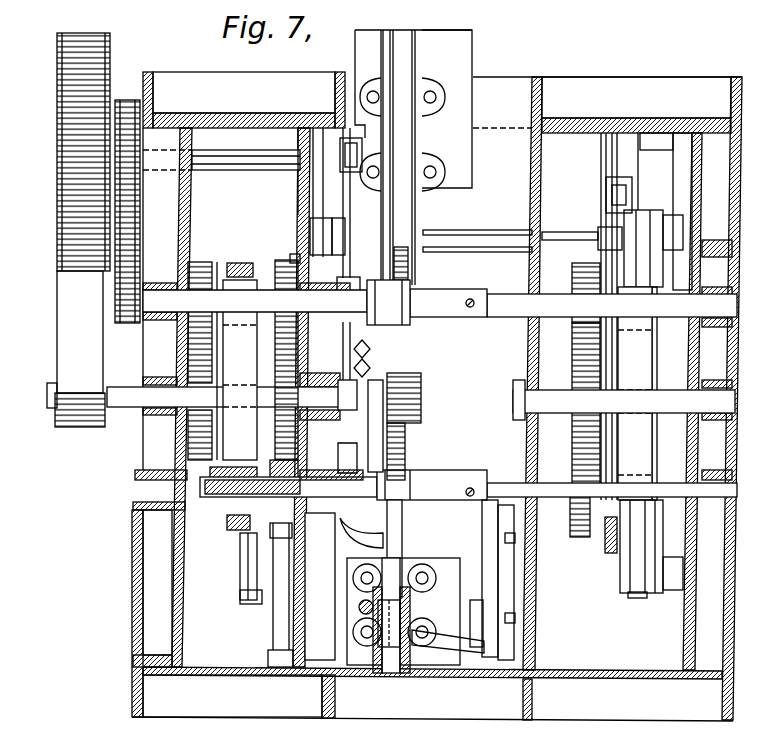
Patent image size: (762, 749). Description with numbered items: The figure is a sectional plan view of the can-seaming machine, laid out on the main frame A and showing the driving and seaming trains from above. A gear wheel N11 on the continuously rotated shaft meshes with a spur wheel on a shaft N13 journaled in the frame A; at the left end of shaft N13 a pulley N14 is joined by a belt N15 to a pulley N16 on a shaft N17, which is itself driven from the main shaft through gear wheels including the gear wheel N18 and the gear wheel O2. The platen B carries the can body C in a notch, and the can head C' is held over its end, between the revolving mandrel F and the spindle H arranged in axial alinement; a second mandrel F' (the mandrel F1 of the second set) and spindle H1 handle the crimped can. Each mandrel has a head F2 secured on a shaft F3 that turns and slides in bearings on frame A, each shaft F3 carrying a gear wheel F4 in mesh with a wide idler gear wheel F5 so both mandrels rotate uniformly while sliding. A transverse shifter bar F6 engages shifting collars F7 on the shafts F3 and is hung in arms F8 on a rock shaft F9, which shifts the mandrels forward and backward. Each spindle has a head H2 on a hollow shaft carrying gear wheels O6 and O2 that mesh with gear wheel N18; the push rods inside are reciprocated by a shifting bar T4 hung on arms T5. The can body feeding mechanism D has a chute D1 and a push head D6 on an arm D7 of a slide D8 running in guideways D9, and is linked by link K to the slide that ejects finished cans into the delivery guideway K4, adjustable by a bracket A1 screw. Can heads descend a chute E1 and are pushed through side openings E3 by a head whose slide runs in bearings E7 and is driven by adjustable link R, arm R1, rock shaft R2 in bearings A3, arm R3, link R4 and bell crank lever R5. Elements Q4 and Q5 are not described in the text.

The main frame A is at (421, 381).
The bracket A1 is at (277, 633).
The bearings A3 is at (288, 208).
The gear wheel N11 is at (140, 245).
The shaft N13 is at (245, 171).
The pulley N14 is at (60, 97).
The belt N15 is at (67, 312).
The pulley N16 is at (56, 420).
The shaft N17 is at (157, 416).
The gear wheel N18 is at (273, 378).
The shifting bar T4 is at (240, 370).
The arms T5 is at (244, 262).
The gear wheel O2 is at (296, 257).
The gear wheel O6 is at (305, 475).
The spindle H is at (320, 586).
The spindle H1 is at (342, 332).
The spindle head H2 is at (360, 287).
The adjustable link R is at (346, 207).
The arm R1 is at (352, 138).
The rock shaft R2 is at (513, 231).
The arm R3 is at (618, 177).
The link R4 is at (612, 209).
The bell crank lever R5 is at (612, 555).
The link K is at (413, 157).
The delivery guideway K4 is at (433, 37).
The mandrel F is at (336, 477).
The mandrel F1 is at (300, 285).
The head F2 is at (418, 320).
The shaft F3 is at (507, 318).
The gear wheel F4 is at (573, 275).
The idler gear wheel F5 is at (571, 440).
The shifter bar F6 is at (637, 367).
The shifting collars F7 is at (654, 280).
The mandrel F' is at (640, 316).
The arms F8 is at (652, 535).
The rock shaft F9 is at (636, 598).
The can body C is at (413, 398).
The platen B is at (406, 437).
The can head C' is at (391, 647).
The chute E1 is at (368, 433).
The side openings E3 is at (361, 540).
The bearings E7 is at (352, 365).
The rod Q4 is at (240, 550).
The rod block Q5 is at (250, 601).
The can body feeding mechanism D is at (403, 633).
The chute D1 is at (380, 582).
The push head D6 is at (402, 620).
The arm D7 is at (447, 650).
The slide D8 is at (483, 658).
The guideways D9 is at (483, 546).